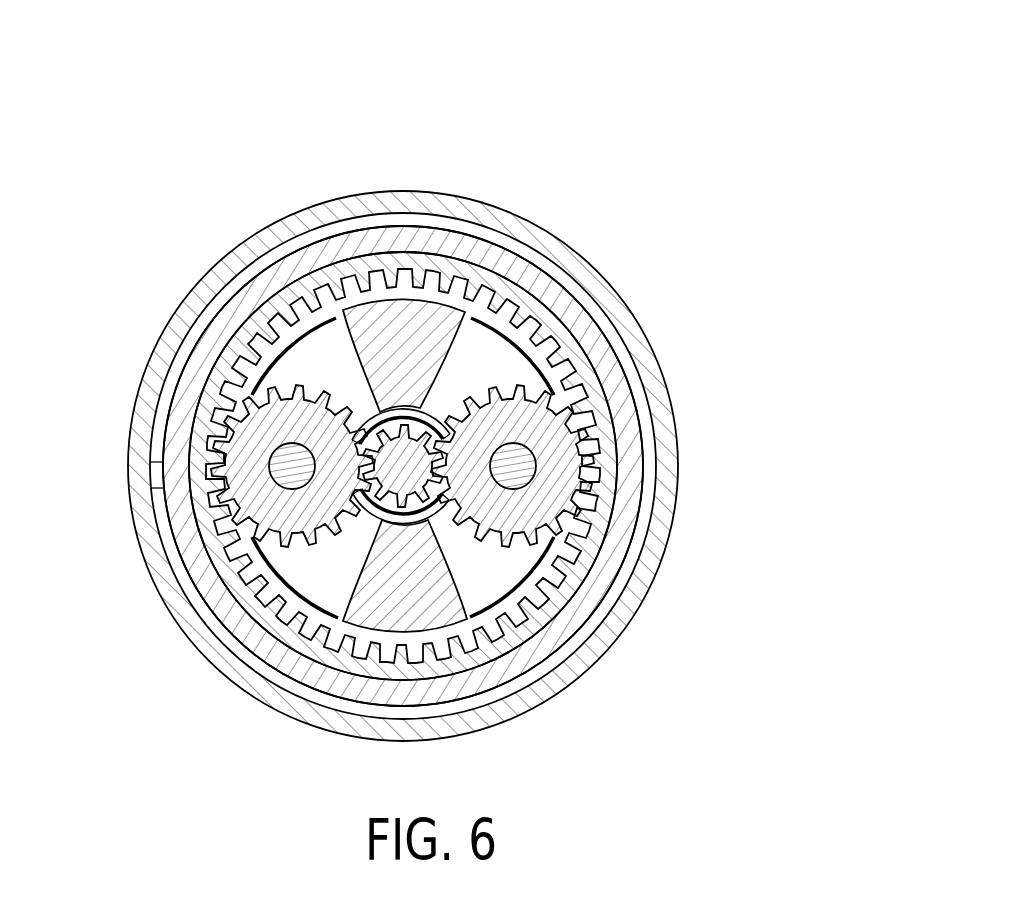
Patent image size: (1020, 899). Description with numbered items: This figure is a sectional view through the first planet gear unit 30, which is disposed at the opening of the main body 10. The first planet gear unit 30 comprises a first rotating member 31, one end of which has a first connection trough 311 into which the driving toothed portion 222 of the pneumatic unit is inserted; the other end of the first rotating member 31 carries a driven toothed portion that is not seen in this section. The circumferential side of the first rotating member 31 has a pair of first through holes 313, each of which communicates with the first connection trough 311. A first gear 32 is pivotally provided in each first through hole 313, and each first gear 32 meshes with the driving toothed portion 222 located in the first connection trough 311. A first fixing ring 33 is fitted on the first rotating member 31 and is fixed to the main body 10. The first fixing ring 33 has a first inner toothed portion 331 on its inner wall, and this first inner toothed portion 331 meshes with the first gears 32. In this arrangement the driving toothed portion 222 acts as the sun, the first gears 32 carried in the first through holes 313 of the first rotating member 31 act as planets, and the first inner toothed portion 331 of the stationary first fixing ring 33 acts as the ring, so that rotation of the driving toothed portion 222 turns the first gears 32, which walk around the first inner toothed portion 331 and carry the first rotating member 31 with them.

The main body 10 is at (558, 230).
The first planet gear unit 30 is at (548, 297).
The first rotating member 31 is at (381, 312).
The first connection trough 311 is at (410, 430).
The first through hole 313 is at (372, 422).
The first gear 32 is at (210, 438).
The first fixing ring 33 is at (478, 466).
The first inner toothed portion 331 is at (577, 395).
The driving toothed portion 222 is at (247, 518).